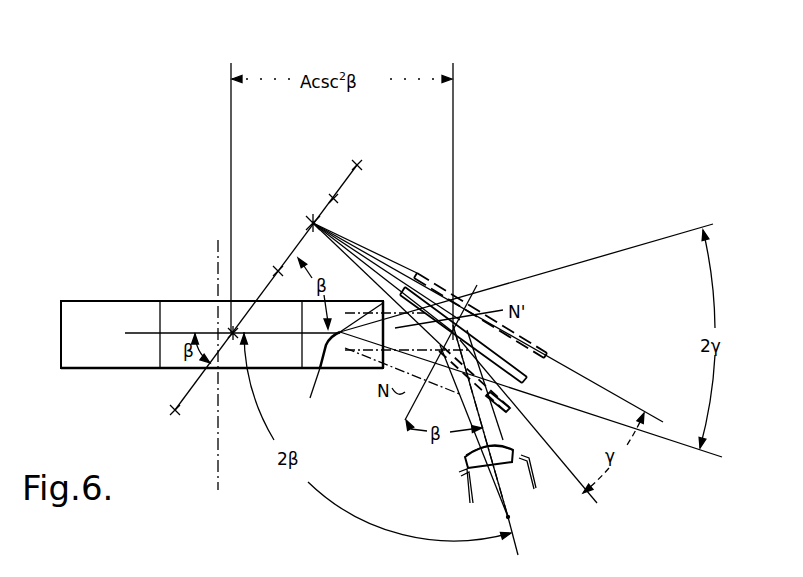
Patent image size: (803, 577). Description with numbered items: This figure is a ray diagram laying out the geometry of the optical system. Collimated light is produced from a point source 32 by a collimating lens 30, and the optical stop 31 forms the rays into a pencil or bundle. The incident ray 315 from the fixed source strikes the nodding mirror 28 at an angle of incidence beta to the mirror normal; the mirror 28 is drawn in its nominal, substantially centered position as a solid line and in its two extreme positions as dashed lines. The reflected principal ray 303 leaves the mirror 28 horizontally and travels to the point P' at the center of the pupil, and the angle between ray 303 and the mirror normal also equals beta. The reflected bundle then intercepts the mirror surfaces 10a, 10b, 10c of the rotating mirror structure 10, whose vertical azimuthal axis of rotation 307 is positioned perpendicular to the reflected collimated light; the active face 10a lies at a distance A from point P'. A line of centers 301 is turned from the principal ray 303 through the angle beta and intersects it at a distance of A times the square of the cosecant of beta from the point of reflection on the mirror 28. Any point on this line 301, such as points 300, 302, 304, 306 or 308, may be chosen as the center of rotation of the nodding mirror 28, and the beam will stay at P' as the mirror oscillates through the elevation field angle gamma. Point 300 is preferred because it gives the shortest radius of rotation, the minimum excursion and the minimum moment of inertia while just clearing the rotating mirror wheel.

The rotating mirror structure 10 is at (110, 290).
The mirror surface 10a is at (344, 362).
The mirror surface 10b is at (280, 362).
The mirror surface 10c is at (111, 362).
The nodding mirror 28 is at (550, 351).
The collimating lens 30 is at (462, 456).
The optical stop 31 is at (518, 470).
The point source 32 is at (510, 517).
The center of rotation point 300 is at (311, 223).
The line of centers 301 is at (341, 202).
The center of rotation point 302 is at (362, 160).
The principal ray 303 is at (340, 331).
The center of rotation point 304 is at (276, 270).
The center of rotation point 306 is at (237, 331).
The axis of rotation 307 is at (216, 290).
The center of rotation point 308 is at (178, 411).
The incident ray 315 is at (493, 434).